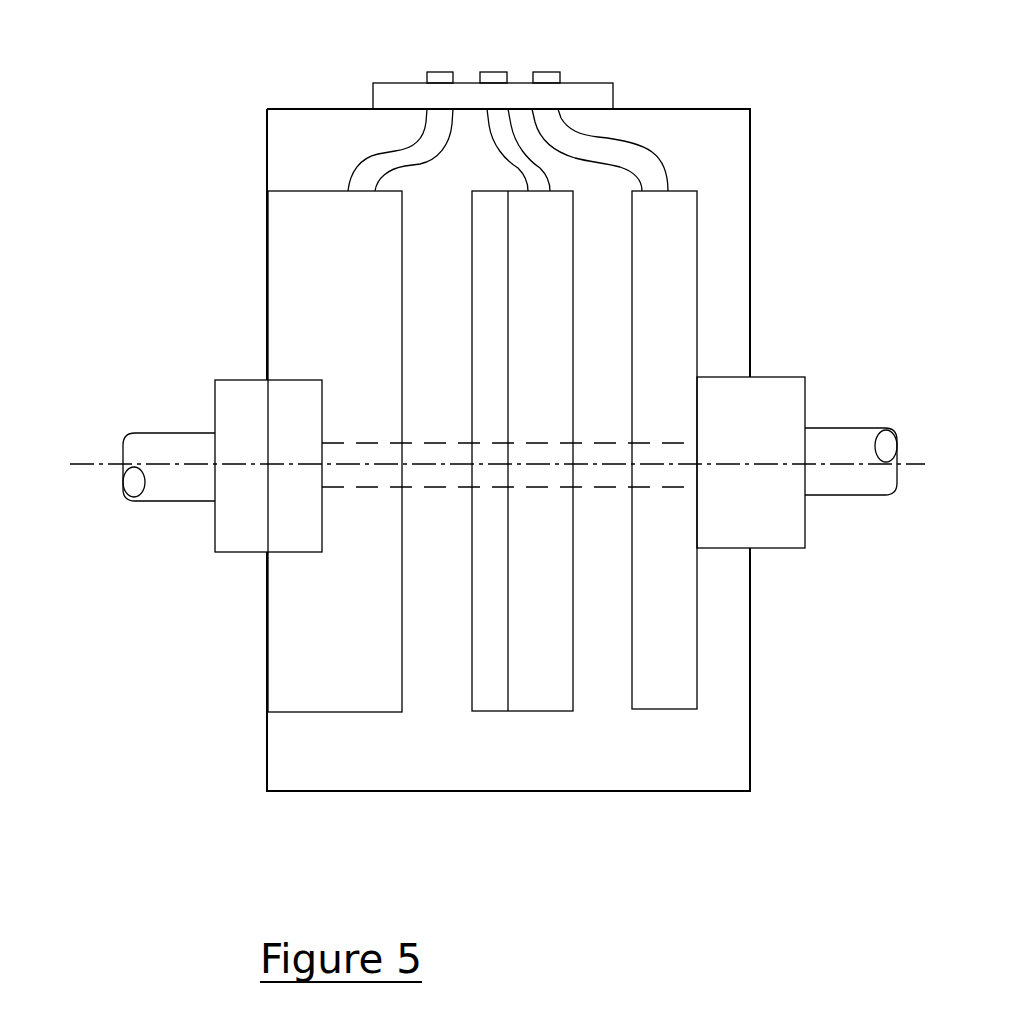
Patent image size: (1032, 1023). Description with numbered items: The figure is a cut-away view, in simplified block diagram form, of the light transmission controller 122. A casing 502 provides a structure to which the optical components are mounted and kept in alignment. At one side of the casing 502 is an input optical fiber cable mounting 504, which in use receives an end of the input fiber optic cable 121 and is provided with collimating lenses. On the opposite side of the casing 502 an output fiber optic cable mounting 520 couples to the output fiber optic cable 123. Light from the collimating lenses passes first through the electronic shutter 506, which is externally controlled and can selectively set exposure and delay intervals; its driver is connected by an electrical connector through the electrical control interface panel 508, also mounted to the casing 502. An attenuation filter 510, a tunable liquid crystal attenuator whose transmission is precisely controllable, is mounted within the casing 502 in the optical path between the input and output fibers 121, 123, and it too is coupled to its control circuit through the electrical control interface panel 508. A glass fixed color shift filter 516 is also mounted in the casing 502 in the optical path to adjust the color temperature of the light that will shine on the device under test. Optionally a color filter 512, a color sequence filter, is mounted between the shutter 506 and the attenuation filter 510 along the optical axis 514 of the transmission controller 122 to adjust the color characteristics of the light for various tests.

The casing 502 is at (619, 794).
The input optical fiber cable mounting 504 is at (242, 540).
The electronic shutter 506 is at (335, 451).
The electrical control interface panel 508 is at (587, 92).
The attenuation filter 510 is at (664, 450).
The color filter 512 is at (522, 451).
The optical axis 514 is at (85, 465).
The fixed color shift filter 516 is at (483, 690).
The output fiber optic cable mounting 520 is at (778, 537).
The input fiber optic cable 121 is at (160, 488).
The light transmission controller 122 is at (162, 812).
The output fiber optic cable 123 is at (858, 442).